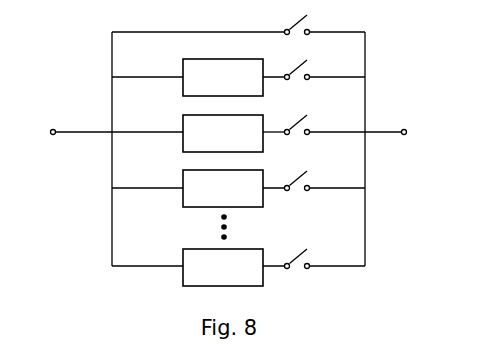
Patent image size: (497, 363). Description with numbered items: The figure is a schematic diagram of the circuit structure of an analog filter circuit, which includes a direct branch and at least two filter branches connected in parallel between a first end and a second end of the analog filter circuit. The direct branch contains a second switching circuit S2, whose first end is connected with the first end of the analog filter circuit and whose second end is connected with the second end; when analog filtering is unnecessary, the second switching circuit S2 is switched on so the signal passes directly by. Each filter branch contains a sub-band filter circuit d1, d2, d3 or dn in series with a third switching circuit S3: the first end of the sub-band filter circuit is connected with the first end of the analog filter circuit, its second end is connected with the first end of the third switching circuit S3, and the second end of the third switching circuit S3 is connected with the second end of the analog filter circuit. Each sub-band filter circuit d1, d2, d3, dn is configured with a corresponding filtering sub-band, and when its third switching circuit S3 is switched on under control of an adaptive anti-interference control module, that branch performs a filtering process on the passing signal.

The second switching circuit S2 is at (308, 21).
The third switching circuit S3 is at (308, 160).
The sub-band filter circuit d1 is at (223, 77).
The sub-band filter circuit d2 is at (223, 133).
The sub-band filter circuit d3 is at (223, 188).
The sub-band filter circuit dn is at (223, 267).